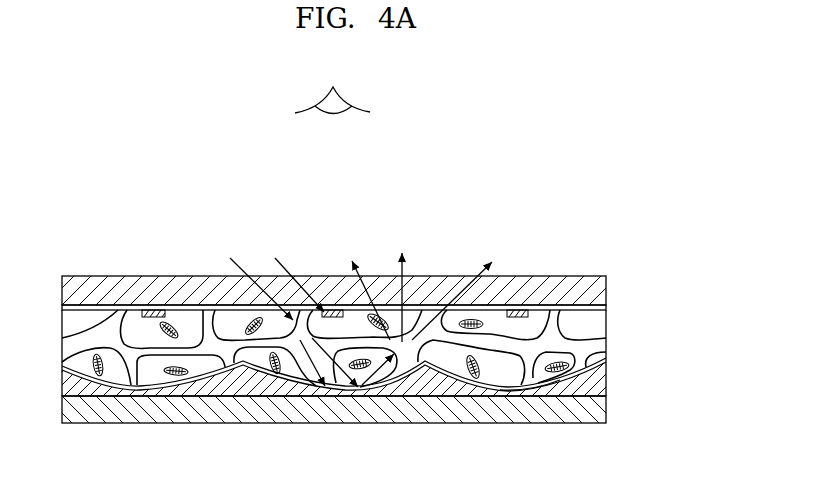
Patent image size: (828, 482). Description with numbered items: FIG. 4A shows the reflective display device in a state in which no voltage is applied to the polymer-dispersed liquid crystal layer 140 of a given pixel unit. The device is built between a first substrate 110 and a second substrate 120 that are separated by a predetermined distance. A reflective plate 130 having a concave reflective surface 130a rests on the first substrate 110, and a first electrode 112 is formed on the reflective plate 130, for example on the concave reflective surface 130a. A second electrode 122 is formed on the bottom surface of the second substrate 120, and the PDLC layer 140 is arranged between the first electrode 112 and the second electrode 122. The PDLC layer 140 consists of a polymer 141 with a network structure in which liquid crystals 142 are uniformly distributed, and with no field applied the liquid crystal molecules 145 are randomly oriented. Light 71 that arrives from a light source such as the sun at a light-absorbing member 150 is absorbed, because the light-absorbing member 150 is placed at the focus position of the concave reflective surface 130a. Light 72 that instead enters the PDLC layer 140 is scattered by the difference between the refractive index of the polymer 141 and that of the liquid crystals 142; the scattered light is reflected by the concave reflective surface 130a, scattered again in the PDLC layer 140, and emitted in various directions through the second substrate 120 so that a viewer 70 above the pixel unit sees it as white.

The viewer 70 is at (352, 94).
The light 71 is at (275, 258).
The light 72 is at (231, 258).
The first substrate 110 is at (606, 415).
The first electrode 112 is at (606, 365).
The second substrate 120 is at (606, 289).
The second electrode 122 is at (606, 308).
The reflective plate 130 is at (606, 385).
The concave reflective surface 130a is at (545, 378).
The polymer-dispersed liquid crystal layer 140 is at (389, 348).
The polymer 141 is at (606, 346).
The liquid crystals 142 is at (606, 326).
The liquid crystal molecules 145 is at (485, 320).
The light-absorbing member 150 is at (152, 310).